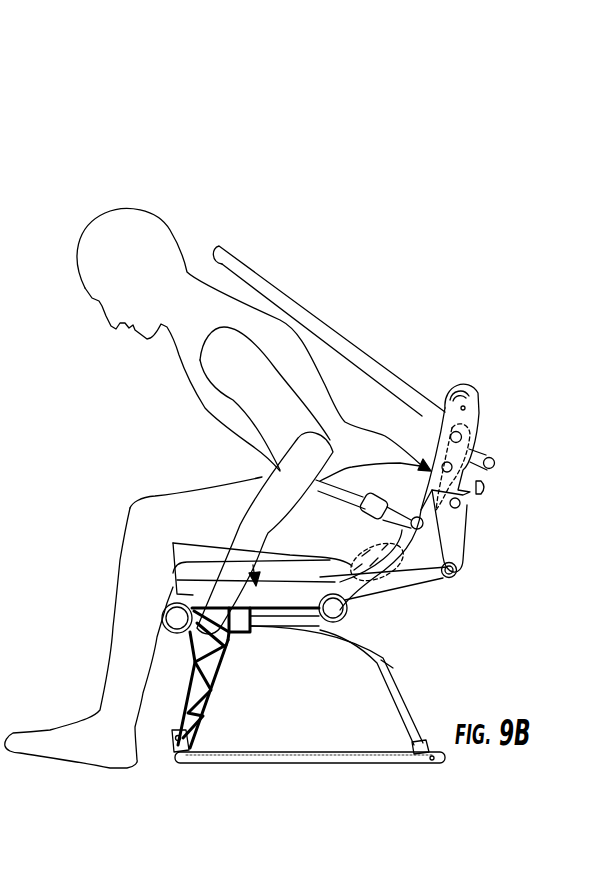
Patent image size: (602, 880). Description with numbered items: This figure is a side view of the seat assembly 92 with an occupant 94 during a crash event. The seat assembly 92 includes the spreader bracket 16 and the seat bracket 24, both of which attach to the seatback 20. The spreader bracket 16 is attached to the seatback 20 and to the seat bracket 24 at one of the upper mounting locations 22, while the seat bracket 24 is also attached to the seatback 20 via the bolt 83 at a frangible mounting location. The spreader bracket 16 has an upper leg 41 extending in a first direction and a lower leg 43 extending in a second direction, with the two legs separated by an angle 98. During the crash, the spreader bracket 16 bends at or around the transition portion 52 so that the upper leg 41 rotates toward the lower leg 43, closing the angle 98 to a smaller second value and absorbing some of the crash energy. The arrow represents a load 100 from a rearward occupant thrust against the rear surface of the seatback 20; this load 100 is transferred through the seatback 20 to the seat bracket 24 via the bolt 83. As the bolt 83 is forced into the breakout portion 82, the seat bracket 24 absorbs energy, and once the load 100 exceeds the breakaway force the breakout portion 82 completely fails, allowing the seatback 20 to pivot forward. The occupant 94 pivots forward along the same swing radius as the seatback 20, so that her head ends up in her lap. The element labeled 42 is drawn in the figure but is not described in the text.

The seat assembly 92 is at (229, 54).
The occupant 94 is at (141, 223).
The angle 98 is at (272, 525).
The seatback 20 is at (222, 253).
The load 100 is at (243, 258).
The spreader bracket 16 is at (474, 406).
The upper mounting location 22 is at (462, 438).
The bolt 83 is at (495, 465).
The breakout portion 82 is at (487, 487).
The upper leg 41 is at (461, 504).
The link pivot 42 is at (424, 521).
The seat bracket 24 is at (457, 550).
The transition portion 52 is at (403, 571).
The lower leg 43 is at (280, 600).